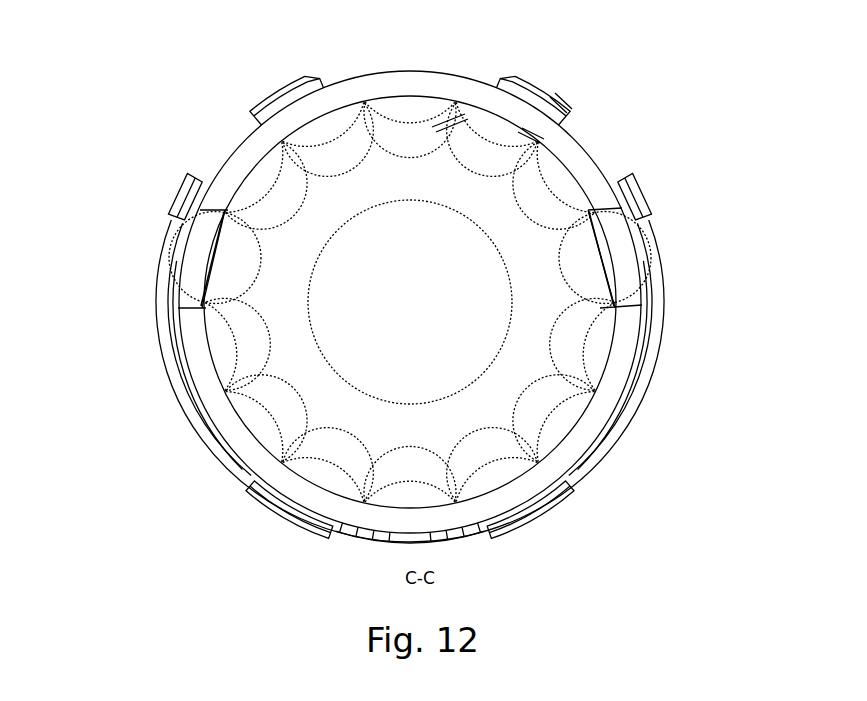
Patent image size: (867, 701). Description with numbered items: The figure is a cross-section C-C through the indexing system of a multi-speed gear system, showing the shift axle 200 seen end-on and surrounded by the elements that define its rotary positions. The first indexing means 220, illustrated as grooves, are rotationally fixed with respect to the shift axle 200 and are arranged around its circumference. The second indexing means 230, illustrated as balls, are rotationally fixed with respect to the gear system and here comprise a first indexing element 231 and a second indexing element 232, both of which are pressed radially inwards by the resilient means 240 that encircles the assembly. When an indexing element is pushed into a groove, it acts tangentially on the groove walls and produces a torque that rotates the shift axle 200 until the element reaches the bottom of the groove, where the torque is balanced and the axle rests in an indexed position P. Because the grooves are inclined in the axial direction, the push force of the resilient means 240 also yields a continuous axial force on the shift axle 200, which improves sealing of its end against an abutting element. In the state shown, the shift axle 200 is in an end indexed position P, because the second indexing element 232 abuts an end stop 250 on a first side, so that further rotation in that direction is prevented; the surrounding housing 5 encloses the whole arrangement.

The tubular body 5 is at (378, 75).
The shift axle 200 is at (498, 395).
The first indexing means 220 is at (275, 205).
The second indexing means 230 is at (412, 224).
The first indexing element 231 is at (190, 252).
The second indexing element 232 is at (628, 252).
The resilient means 240 is at (197, 430).
The end stop 250 is at (587, 358).
The indexed position P is at (540, 195).